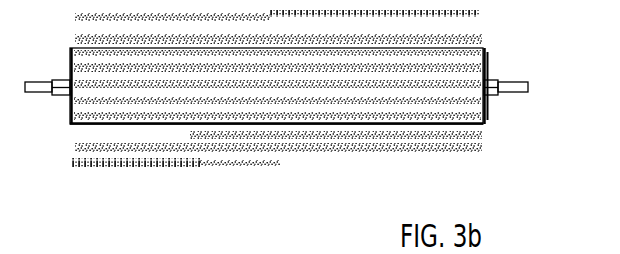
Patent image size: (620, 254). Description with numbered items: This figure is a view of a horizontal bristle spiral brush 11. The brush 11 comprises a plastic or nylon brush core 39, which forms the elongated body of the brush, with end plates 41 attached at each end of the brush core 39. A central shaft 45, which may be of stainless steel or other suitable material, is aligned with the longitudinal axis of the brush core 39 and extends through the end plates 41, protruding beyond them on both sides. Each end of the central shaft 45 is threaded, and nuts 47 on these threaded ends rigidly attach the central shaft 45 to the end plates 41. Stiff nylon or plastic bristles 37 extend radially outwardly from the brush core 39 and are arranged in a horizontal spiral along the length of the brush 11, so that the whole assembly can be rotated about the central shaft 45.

The brush 11 is at (363, 200).
The bristles 37 is at (107, 167).
The brush core 39 is at (232, 128).
The end plates 41 is at (69, 106).
The central shaft 45 is at (33, 81).
The nuts 47 is at (55, 79).